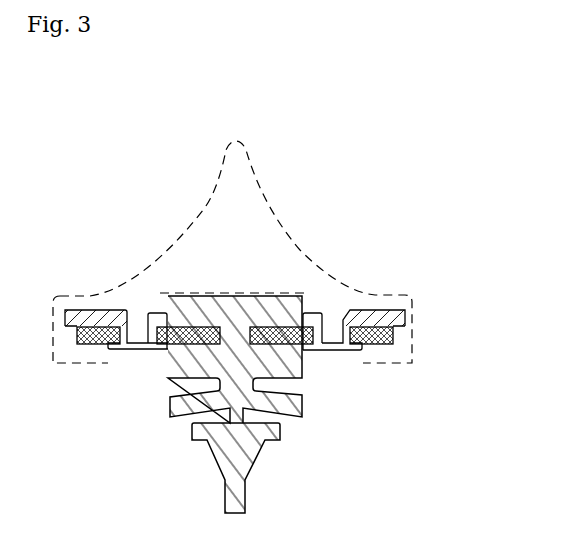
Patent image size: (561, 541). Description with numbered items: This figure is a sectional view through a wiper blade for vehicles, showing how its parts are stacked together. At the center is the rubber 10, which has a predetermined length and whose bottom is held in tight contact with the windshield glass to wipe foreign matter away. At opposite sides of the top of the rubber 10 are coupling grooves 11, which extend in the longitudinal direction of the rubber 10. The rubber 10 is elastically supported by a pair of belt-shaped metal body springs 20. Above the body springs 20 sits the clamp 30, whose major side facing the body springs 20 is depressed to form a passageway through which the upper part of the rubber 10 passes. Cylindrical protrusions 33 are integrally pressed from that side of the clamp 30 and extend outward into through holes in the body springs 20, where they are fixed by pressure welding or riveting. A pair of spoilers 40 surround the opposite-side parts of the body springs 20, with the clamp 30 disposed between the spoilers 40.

The rubber 10 is at (270, 470).
The coupling grooves 11 is at (226, 338).
The body springs 20 is at (397, 335).
The clamp 30 is at (397, 319).
The protrusions 33 is at (332, 351).
The spoilers 40 is at (253, 147).